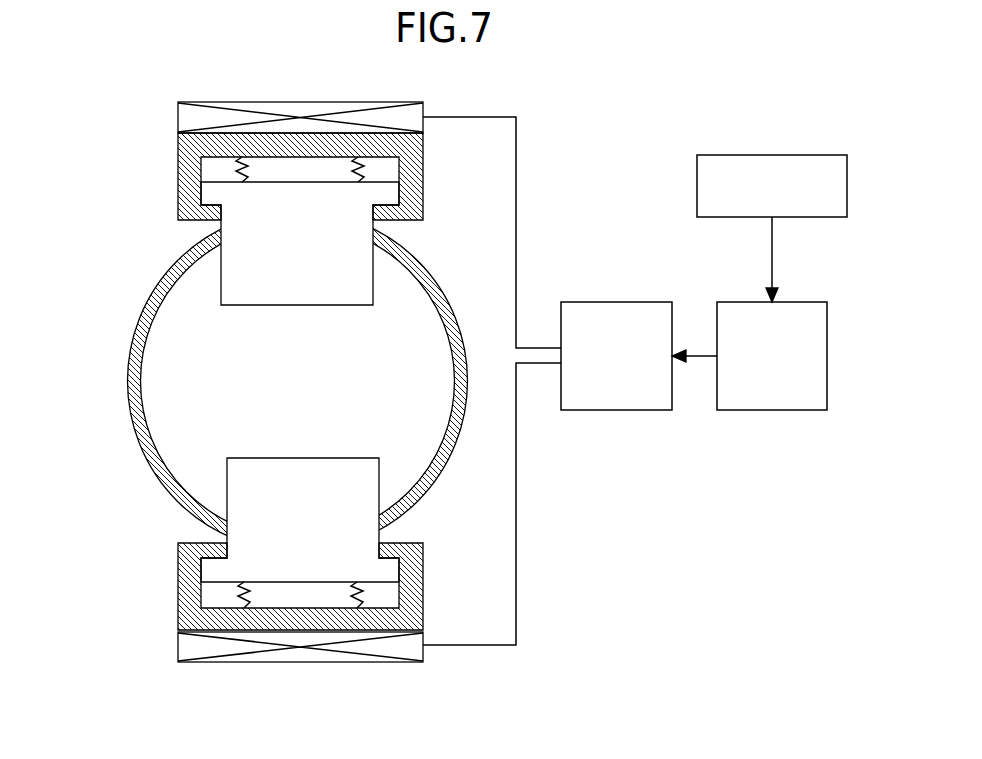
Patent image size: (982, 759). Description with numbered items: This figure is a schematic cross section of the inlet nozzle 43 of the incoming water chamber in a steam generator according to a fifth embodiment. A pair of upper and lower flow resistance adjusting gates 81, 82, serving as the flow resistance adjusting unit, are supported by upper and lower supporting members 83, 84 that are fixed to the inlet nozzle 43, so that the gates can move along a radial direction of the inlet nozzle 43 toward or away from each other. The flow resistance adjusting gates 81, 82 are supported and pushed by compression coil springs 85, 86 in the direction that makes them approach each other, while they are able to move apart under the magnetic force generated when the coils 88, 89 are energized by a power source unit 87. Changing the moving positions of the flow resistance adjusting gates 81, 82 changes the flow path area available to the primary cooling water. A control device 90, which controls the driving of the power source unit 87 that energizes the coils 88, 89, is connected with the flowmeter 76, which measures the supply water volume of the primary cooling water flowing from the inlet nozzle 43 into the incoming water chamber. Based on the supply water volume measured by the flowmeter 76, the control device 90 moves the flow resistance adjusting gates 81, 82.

The inlet nozzle 43 is at (128, 350).
The flowmeter 76 is at (788, 155).
The flow resistance adjusting gate 81 is at (274, 280).
The flow resistance adjusting gate 82 is at (272, 477).
The supporting member 83 is at (423, 199).
The supporting member 84 is at (423, 560).
The compression coil spring 85 is at (242, 160).
The compression coil spring 86 is at (242, 604).
The power source unit 87 is at (603, 410).
The coil 88 is at (345, 107).
The coil 89 is at (308, 652).
The control device 90 is at (778, 410).